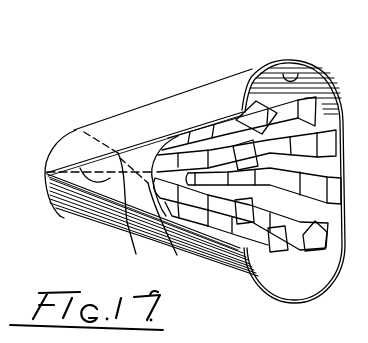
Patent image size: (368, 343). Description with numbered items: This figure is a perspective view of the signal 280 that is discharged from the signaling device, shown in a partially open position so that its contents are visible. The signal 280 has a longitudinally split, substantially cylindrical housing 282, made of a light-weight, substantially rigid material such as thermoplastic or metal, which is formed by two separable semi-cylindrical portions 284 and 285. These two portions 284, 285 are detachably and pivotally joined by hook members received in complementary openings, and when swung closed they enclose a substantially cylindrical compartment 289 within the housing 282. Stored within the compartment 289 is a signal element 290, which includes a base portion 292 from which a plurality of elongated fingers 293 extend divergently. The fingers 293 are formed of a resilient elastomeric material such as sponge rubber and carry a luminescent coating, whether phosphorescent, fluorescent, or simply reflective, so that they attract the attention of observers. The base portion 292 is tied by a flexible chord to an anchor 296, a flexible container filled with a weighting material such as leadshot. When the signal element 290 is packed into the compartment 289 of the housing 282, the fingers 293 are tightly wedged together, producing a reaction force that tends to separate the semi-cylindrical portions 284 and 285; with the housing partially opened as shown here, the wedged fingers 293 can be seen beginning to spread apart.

The signal 280 is at (114, 112).
The housing 282 is at (177, 98).
The semi-cylindrical portion 284 is at (237, 88).
The semi-cylindrical portion 285 is at (227, 270).
The compartment 289 is at (300, 70).
The signal element 290 is at (176, 253).
The base portion 292 is at (124, 242).
The elongated fingers 293 is at (334, 224).
The anchor 296 is at (74, 201).